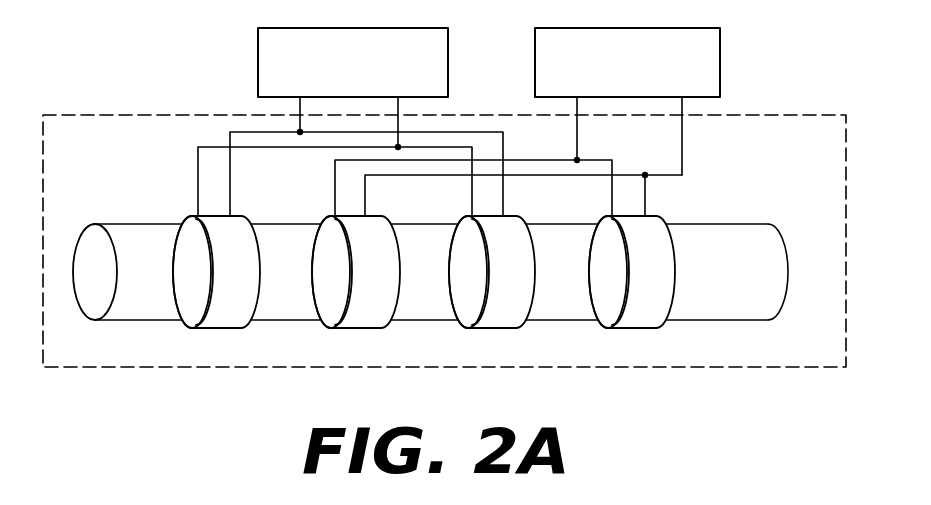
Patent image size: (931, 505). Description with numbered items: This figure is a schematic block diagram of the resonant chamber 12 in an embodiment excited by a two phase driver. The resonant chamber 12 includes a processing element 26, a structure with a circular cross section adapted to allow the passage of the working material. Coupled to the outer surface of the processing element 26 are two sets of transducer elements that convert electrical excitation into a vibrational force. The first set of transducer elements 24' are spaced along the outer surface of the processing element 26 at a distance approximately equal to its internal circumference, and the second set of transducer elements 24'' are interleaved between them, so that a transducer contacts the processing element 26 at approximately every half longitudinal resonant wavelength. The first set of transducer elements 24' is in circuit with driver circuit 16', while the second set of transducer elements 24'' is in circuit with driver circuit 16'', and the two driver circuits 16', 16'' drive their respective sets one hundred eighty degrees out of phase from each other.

The resonant chamber 12 is at (570, 367).
The driver circuit 16' is at (381, 62).
The driver circuit 16'' is at (661, 62).
The first set of transducer elements 24' is at (319, 285).
The second set of transducer elements 24'' is at (464, 285).
The processing element 26 is at (150, 224).